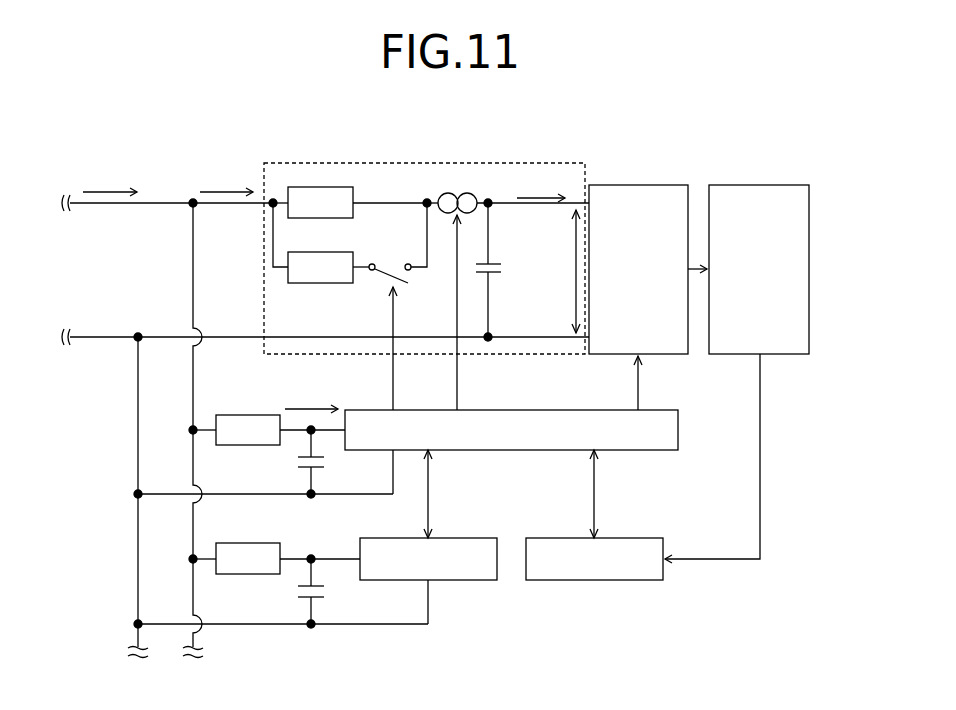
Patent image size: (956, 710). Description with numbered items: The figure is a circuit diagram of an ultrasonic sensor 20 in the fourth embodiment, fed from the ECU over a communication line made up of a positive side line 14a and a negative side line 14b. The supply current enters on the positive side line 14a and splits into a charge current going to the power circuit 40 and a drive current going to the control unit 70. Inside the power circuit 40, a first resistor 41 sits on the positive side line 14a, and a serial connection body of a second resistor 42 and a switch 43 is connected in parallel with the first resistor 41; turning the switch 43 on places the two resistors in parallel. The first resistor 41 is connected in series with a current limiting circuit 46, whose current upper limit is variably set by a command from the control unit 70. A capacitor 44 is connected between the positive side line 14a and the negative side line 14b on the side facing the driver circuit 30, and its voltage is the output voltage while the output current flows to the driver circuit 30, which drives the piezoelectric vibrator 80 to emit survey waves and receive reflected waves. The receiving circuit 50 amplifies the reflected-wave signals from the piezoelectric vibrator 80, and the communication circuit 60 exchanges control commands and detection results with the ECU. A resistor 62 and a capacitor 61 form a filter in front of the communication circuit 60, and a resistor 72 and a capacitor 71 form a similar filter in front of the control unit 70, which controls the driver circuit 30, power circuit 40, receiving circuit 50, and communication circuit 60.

The positive side line 14a is at (166, 200).
The negative side line 14b is at (166, 336).
The ultrasonic sensor 20 is at (778, 137).
The driver circuit 30 is at (672, 185).
The power circuit 40 is at (466, 163).
The first resistor 41 is at (355, 193).
The second resistor 42 is at (356, 262).
The switch 43 is at (379, 275).
The capacitor 44 is at (491, 262).
The current limiting circuit 46 is at (446, 193).
The receiving circuit 50 is at (638, 538).
The communication circuit 60 is at (473, 538).
The capacitor 61 is at (324, 597).
The resistor 62 is at (250, 543).
The control unit 70 is at (655, 410).
The capacitor 71 is at (324, 466).
The resistor 72 is at (250, 415).
The piezoelectric vibrator 80 is at (795, 185).